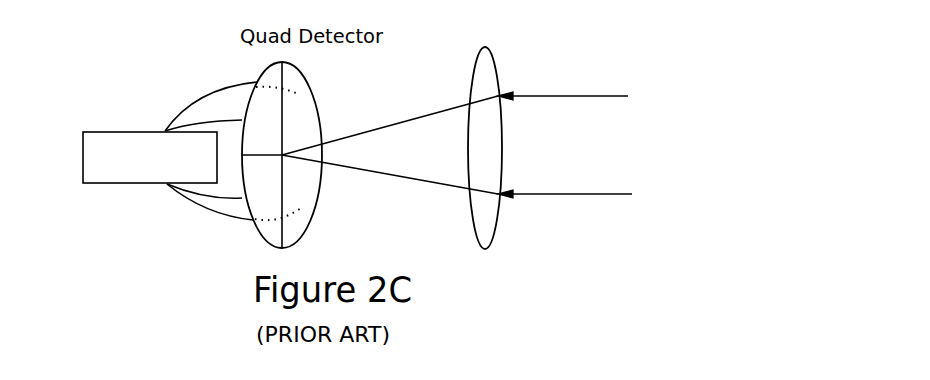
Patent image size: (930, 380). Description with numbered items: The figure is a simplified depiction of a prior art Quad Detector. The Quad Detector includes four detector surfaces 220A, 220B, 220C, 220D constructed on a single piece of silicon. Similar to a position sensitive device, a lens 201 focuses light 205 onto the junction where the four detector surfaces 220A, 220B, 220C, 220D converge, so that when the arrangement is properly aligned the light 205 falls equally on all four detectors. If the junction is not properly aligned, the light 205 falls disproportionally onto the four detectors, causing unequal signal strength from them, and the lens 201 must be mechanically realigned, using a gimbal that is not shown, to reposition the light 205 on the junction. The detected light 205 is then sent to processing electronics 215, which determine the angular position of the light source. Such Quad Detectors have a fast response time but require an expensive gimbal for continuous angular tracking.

The lens 201 is at (487, 46).
The light 205 is at (400, 175).
The processing electronics 215 is at (120, 132).
The detector surface 220A is at (257, 80).
The detector surface 220B is at (301, 71).
The detector surface 220C is at (313, 211).
The detector surface 220D is at (240, 208).